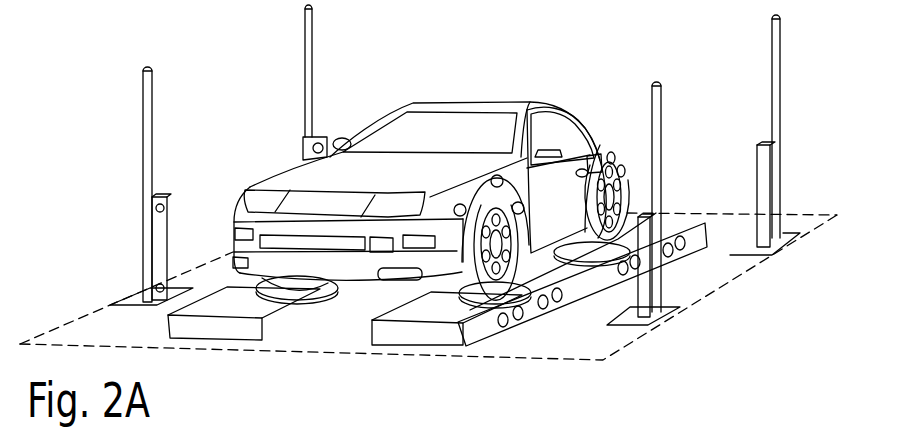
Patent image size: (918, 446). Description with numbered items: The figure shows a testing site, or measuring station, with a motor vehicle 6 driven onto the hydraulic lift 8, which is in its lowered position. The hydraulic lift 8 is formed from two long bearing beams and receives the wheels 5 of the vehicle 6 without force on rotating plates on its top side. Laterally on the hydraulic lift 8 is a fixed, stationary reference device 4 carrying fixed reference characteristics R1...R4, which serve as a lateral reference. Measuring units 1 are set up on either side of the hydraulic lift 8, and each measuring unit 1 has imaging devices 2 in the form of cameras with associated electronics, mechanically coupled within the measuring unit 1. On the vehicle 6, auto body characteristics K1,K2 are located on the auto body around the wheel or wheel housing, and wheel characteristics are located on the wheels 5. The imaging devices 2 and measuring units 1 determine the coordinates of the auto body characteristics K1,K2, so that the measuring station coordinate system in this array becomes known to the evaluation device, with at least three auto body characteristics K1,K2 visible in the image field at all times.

The measuring unit 1 is at (150, 235).
The imaging device 2 is at (167, 281).
The reference device 4 is at (575, 292).
The wheel 5 is at (467, 292).
The motor vehicle 6 is at (443, 103).
The hydraulic lift 8 is at (385, 338).
The reference characteristics R1...R4 is at (542, 305).
The auto body characteristics K1,K2 is at (622, 178).